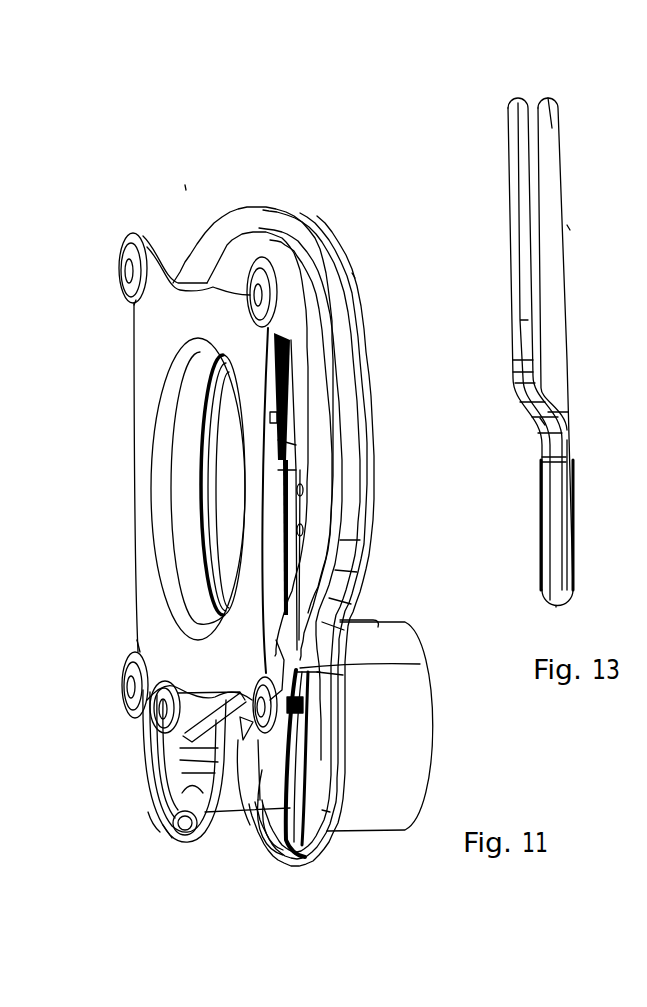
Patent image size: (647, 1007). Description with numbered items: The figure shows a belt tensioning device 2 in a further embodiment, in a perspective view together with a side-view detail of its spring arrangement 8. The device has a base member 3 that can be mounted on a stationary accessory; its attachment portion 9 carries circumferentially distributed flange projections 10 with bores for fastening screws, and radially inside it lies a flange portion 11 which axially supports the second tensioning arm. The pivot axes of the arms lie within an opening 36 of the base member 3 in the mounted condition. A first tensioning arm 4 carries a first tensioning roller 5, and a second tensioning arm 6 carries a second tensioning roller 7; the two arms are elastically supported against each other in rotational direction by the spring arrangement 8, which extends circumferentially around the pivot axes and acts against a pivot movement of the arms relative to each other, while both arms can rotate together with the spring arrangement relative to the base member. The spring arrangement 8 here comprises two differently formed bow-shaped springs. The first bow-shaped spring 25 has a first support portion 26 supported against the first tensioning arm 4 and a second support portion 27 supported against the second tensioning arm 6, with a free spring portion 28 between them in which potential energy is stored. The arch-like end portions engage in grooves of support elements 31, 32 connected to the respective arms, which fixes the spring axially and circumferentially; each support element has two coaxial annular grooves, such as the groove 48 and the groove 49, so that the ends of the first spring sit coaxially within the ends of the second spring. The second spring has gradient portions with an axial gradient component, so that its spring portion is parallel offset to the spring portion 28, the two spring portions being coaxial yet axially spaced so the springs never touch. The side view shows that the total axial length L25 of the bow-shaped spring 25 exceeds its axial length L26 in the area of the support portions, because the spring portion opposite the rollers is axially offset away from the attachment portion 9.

In FIG. 11, the belt tensioning device 2 is at (186, 187).
In FIG. 11, the base member 3 is at (130, 580).
In FIG. 11, the first tensioning arm 4 is at (293, 668).
In FIG. 11, the first tensioning roller 5 is at (413, 755).
In FIG. 11, the second tensioning arm 6 is at (193, 727).
In FIG. 11, the second tensioning roller 7 is at (237, 803).
In FIG. 11, the spring arrangement 8 is at (356, 272).
In FIG. 13, the spring arrangement 8 is at (572, 224).
In FIG. 11, the attachment portion 9 is at (146, 642).
In FIG. 11, the flange projections 10 is at (125, 248).
In FIG. 11, the flange portion 11 is at (180, 308).
In FIG. 11, the first bow-shaped spring 25 is at (323, 391).
In FIG. 13, the first bow-shaped spring 25 is at (564, 168).
In FIG. 11, the first support portion 26 is at (293, 828).
In FIG. 11, the second support portion 27 is at (187, 797).
In FIG. 11, the free spring portion 28 is at (248, 224).
In FIG. 13, the free spring portion 28 is at (552, 128).
In FIG. 11, the support element 31 is at (274, 845).
In FIG. 11, the support element 32 is at (157, 818).
In FIG. 13, the support element 32 is at (543, 492).
In FIG. 11, the opening 36 is at (190, 504).
In FIG. 11, the annular groove 48 is at (180, 775).
In FIG. 11, the annular groove 49 is at (258, 848).
In FIG. 13, the total axial length of the bow-shaped spring L25 is at (455, 300).
In FIG. 13, the axial length of the spring in the area of the support portions L26 is at (487, 566).